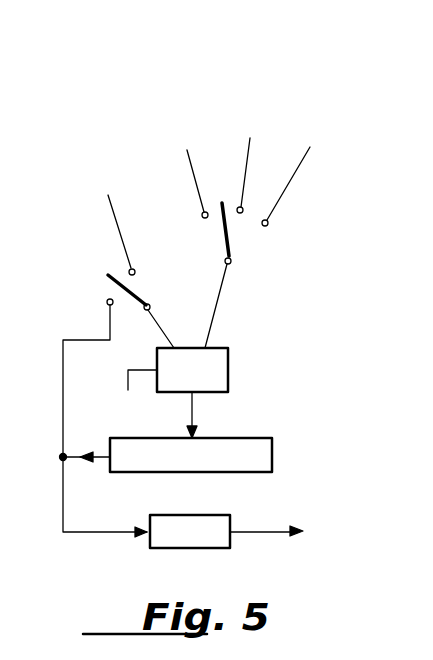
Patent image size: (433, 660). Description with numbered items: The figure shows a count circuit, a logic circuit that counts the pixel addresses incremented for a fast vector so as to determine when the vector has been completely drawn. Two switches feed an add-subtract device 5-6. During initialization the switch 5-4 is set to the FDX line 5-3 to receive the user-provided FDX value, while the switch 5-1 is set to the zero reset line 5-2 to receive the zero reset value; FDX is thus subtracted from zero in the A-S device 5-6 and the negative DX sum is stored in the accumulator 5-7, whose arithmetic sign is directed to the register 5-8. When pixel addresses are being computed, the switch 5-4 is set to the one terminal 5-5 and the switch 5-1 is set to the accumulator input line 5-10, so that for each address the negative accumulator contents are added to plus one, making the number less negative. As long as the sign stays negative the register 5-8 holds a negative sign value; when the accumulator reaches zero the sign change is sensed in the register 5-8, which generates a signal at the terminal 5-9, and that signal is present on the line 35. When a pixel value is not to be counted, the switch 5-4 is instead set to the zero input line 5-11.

The switch 5-1 is at (134, 283).
The zero reset line 5-2 is at (111, 215).
The FDX line 5-3 is at (253, 153).
The switch 5-4 is at (243, 238).
The one terminal 5-5 is at (283, 195).
The add-subtract device 5-6 is at (220, 367).
The accumulator 5-7 is at (265, 455).
The register 5-8 is at (217, 543).
The terminal 5-9 is at (260, 528).
The accumulator input line 5-10 is at (106, 312).
The zero input line 5-11 is at (201, 215).
The line 35 is at (283, 535).